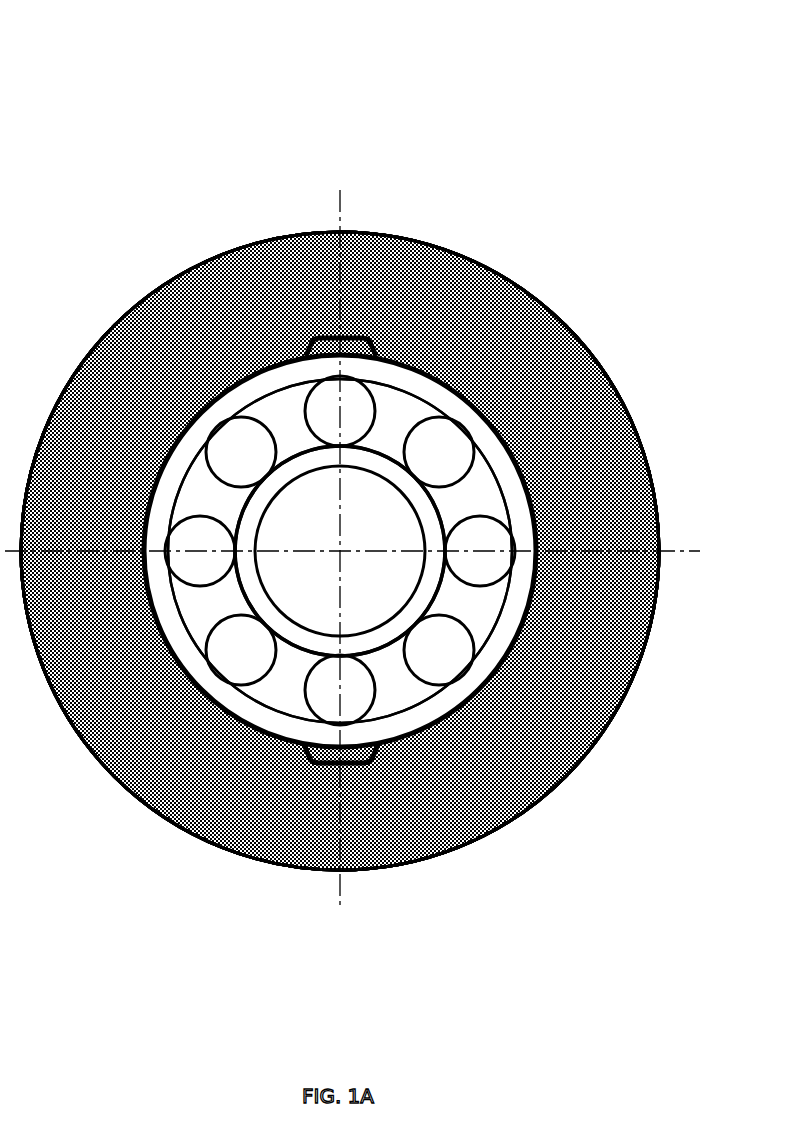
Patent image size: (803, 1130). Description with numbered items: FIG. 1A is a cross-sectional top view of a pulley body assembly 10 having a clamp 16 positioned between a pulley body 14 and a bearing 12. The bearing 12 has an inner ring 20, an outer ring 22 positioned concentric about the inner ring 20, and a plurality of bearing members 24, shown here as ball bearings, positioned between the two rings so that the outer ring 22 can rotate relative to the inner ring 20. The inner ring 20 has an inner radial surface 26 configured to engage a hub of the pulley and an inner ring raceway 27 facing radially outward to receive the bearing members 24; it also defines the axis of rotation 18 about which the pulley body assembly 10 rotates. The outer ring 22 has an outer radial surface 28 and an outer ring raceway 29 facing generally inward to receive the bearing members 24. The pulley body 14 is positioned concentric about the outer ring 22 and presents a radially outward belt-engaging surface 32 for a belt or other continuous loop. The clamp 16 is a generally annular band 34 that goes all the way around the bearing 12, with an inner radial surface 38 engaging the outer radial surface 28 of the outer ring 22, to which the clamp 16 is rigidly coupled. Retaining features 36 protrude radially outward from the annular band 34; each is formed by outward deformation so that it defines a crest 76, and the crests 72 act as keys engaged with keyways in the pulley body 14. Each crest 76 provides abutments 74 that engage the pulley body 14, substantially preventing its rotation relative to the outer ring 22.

The pulley body assembly 10 is at (575, 103).
The bearing 12 is at (455, 680).
The pulley body 14 is at (132, 300).
The clamp 16 is at (568, 324).
The axis of rotation 18 is at (343, 551).
The inner ring 20 is at (292, 467).
The outer ring 22 is at (638, 666).
The bearing members 24 is at (657, 596).
The inner radial surface 26 is at (258, 581).
The inner ring raceway 27 is at (242, 590).
The outer radial surface 28 is at (622, 701).
The outer ring raceway 29 is at (410, 706).
The belt-engaging surface 32 is at (258, 721).
The annular band 34 is at (168, 822).
The retaining features 36 is at (362, 338).
The inner radial surface 38 is at (350, 744).
The crests 72 is at (310, 393).
The abutments 74 is at (220, 253).
The crest 76 is at (402, 235).